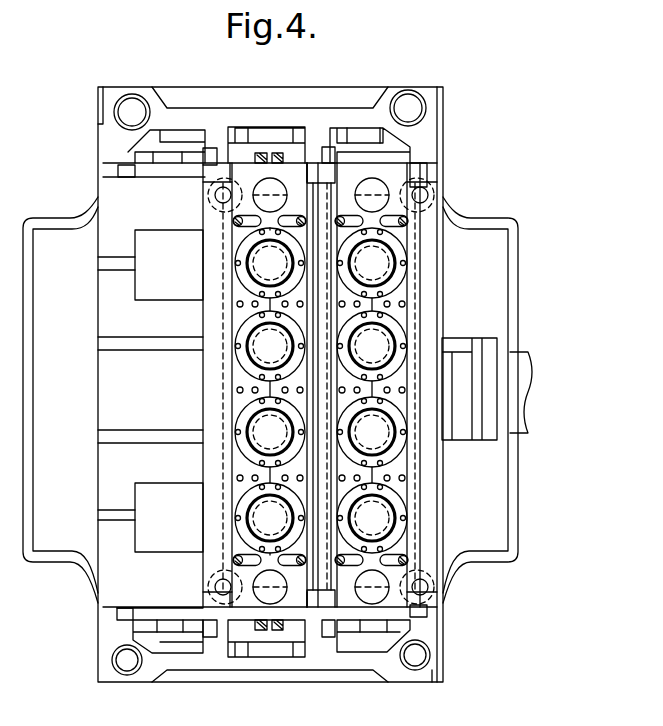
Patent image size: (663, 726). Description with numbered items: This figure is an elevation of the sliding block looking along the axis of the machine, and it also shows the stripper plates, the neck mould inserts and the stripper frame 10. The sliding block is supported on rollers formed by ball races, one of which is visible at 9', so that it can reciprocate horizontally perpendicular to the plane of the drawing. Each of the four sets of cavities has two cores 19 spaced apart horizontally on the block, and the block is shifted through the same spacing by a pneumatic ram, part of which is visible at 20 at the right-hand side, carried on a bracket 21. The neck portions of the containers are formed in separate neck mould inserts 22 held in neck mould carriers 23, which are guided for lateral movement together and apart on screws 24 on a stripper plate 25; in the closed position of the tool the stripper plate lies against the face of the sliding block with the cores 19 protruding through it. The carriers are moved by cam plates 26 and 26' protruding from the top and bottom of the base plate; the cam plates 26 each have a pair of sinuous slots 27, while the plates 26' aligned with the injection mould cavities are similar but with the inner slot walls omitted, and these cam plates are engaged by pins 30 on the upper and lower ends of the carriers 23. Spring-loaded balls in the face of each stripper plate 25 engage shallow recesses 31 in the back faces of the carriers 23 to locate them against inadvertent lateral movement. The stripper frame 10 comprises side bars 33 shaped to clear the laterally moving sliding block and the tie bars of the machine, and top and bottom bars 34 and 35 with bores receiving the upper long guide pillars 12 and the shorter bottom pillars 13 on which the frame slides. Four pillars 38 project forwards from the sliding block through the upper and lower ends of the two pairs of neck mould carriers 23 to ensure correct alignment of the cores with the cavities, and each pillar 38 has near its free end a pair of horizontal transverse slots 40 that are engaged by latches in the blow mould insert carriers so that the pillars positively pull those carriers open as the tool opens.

The ball race roller 9' is at (327, 397).
The stripper frame 10 is at (72, 572).
The main long guide pillar 12 is at (134, 106).
The short guide pillar 13 is at (117, 660).
The core 19 is at (262, 263).
The pneumatic ram 20 is at (500, 363).
The bracket 21 is at (458, 346).
The neck mould insert 22 is at (242, 278).
The neck mould carrier 23 is at (278, 388).
The screw 24 is at (290, 228).
The stripper plate 25 is at (210, 243).
The cam plate 26 is at (263, 386).
The cam plate 26' is at (272, 384).
The sinuous slot 27 is at (190, 157).
The pin 30 is at (276, 152).
The shallow recess 31 is at (255, 308).
The side bar 33 is at (29, 441).
The top bar 34 is at (440, 190).
The bottom bar 35 is at (431, 672).
The pillar 38 is at (272, 193).
The horizontal transverse slot 40 is at (250, 140).